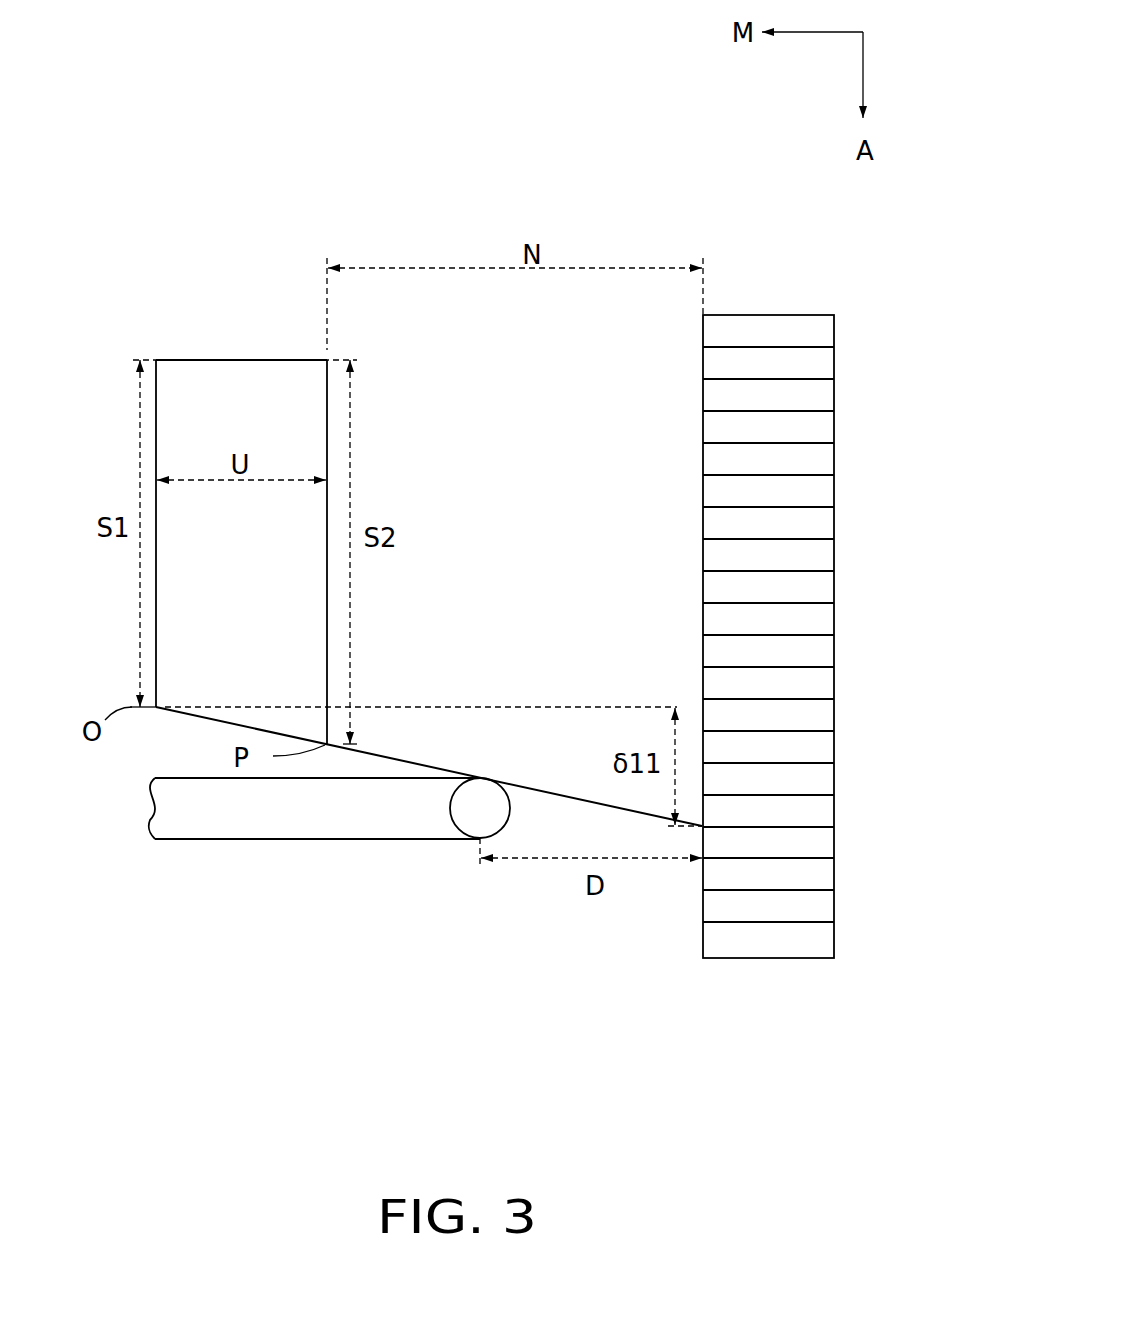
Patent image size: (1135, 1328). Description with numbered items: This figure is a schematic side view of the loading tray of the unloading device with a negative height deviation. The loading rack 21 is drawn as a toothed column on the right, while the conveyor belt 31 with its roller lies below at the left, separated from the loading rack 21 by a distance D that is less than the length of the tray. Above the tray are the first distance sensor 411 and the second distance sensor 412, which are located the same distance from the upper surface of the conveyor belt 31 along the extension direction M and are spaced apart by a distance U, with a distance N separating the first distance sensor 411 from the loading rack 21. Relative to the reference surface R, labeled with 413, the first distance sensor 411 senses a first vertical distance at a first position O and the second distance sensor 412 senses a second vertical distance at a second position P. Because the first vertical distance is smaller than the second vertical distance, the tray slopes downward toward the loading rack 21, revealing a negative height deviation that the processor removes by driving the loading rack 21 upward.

The loading rack 21 is at (703, 423).
The conveyor belt 31 is at (268, 810).
The first distance sensor 411 is at (157, 351).
The second distance sensor 412 is at (324, 352).
The top surface R 413 is at (233, 364).